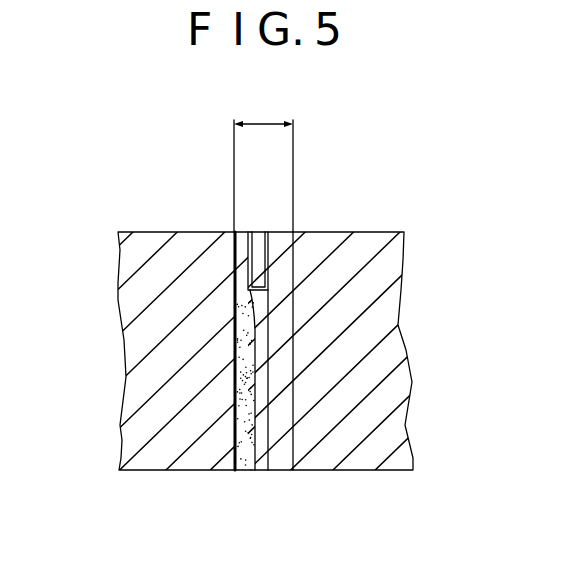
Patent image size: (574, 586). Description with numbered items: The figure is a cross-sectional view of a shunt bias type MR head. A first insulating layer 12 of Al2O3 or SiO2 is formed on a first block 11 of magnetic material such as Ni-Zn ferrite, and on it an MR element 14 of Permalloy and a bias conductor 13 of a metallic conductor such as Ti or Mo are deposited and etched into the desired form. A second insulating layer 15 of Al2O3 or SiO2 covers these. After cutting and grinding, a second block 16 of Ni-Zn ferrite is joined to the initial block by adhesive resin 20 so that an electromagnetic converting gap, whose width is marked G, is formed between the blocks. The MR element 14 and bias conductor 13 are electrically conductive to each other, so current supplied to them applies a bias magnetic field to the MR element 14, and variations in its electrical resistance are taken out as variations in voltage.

The first block 11 is at (378, 272).
The first insulating layer 12 is at (277, 245).
The bias conductor 13 is at (248, 243).
The MR element 14 is at (262, 238).
The second insulating layer 15 is at (232, 243).
The second block 16 is at (134, 273).
The adhesive resin 20 is at (242, 462).
The gap width G is at (263, 161).